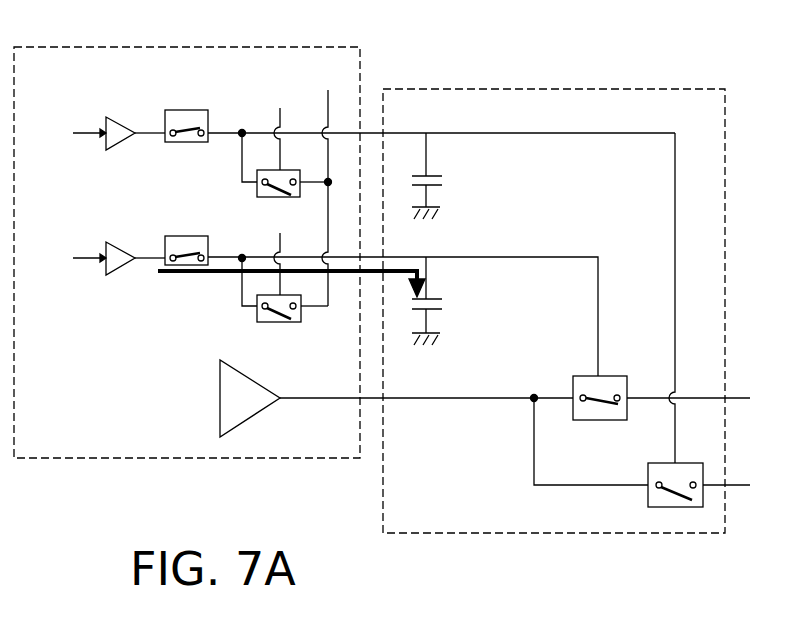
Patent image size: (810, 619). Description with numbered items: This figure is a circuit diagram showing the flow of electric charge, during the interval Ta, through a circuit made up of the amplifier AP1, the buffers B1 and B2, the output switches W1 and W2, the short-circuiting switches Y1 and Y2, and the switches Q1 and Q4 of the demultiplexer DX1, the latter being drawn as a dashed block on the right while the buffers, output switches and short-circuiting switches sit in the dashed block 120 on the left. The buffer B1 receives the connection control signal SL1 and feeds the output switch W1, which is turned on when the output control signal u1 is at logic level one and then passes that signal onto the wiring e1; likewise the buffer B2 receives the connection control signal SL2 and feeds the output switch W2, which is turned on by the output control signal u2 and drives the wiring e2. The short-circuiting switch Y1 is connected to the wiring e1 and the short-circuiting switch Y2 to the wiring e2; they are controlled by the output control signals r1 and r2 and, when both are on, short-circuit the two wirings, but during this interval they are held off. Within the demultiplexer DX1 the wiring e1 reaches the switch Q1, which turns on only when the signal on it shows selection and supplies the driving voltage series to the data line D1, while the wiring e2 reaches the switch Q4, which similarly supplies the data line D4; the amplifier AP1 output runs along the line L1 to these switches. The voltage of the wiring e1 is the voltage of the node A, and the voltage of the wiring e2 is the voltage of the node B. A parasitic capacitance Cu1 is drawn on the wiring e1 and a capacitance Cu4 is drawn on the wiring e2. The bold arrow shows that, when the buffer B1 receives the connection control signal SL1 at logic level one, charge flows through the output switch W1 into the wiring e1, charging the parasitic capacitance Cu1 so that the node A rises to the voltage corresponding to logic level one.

The drive circuit 120 is at (327, 47).
The demultiplexer DX1 is at (657, 88).
The connection control signal SL2 is at (69, 133).
The connection control signal SL1 is at (69, 261).
The buffer B2 is at (120, 142).
The buffer B1 is at (120, 267).
The output control signal u2 is at (187, 110).
The output control signal u1 is at (187, 236).
The output switch W2 is at (165, 125).
The output switch W1 is at (165, 250).
The output control signal r2 is at (280, 128).
The output control signal r1 is at (280, 253).
The short-circuiting switch Y2 is at (300, 152).
The short-circuiting switch Y1 is at (300, 277).
The wiring e2 is at (492, 133).
The wiring e1 is at (492, 257).
The node B is at (428, 141).
The node A is at (427, 265).
The capacitor Cu4 is at (430, 174).
The parasitic capacitance Cu1 is at (430, 297).
The amplifier AP1 is at (250, 378).
The line L1 is at (478, 398).
The switch Q1 is at (596, 420).
The switch Q4 is at (648, 501).
The data line D1 is at (705, 401).
The data line D4 is at (658, 449).